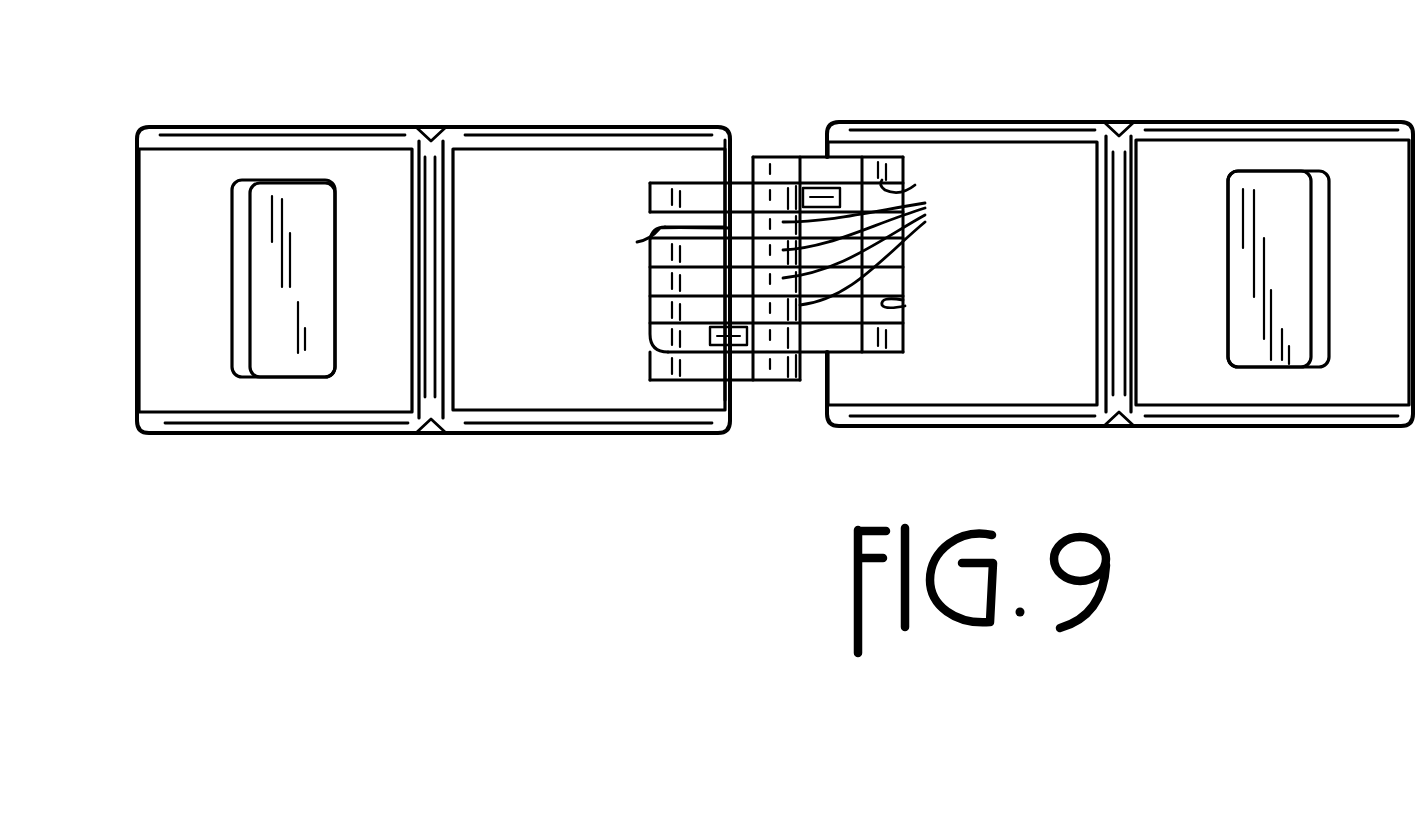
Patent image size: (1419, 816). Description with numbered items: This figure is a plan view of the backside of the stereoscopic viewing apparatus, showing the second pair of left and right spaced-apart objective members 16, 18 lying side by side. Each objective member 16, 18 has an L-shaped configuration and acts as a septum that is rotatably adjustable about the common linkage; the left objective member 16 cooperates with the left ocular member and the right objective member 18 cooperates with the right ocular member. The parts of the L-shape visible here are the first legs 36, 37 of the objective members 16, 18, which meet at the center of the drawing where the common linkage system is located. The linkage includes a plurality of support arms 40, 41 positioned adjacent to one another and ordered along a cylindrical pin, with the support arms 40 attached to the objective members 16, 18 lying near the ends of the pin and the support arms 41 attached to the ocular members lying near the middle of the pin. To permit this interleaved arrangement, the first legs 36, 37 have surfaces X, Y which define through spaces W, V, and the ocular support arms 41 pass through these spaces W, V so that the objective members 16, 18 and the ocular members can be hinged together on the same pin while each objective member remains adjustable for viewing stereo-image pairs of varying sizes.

The left objective member 16 is at (1270, 60).
The right objective member 18 is at (341, 74).
The first leg 36 is at (1026, 108).
The first leg 37 is at (508, 172).
The support arm 40 is at (790, 178).
The support arm 41 is at (883, 247).
The through space V is at (648, 284).
The through space W is at (905, 306).
The surface X is at (915, 185).
The surface Y is at (637, 242).